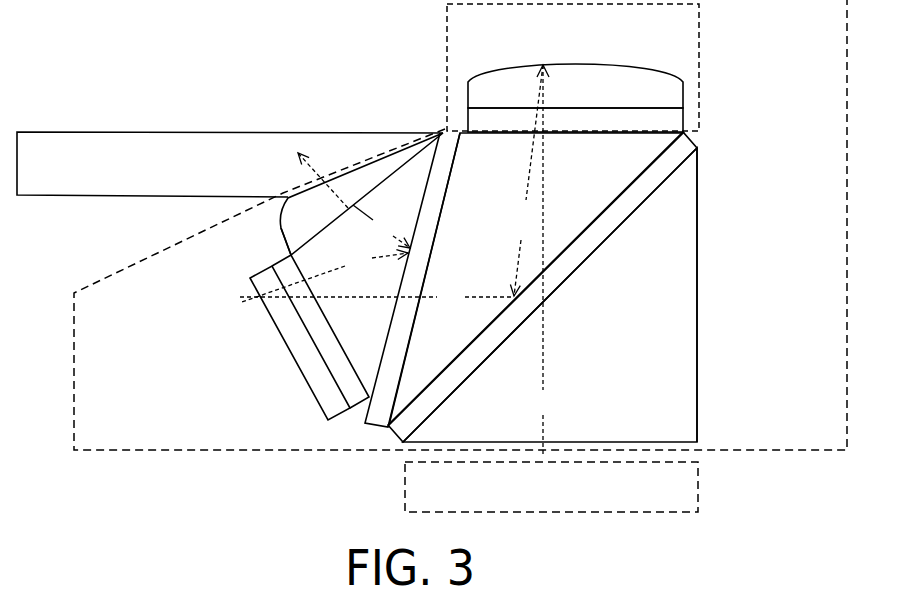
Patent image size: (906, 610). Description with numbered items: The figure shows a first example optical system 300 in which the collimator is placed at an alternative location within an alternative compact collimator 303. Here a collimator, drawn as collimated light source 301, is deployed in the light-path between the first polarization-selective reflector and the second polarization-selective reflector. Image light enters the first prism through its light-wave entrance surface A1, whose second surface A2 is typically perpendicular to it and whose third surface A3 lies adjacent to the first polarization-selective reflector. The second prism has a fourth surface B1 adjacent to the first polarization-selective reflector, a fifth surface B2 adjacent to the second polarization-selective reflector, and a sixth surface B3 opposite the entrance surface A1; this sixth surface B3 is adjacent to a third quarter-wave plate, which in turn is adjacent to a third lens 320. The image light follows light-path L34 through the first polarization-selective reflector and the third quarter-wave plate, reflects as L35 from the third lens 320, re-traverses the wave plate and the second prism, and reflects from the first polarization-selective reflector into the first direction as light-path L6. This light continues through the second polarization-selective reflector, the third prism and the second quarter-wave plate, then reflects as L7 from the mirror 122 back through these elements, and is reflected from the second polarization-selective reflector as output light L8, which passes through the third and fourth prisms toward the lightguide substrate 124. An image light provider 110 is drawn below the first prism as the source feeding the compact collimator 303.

The optical system 300 is at (298, 85).
The collimated light source 301 is at (573, 89).
The compact collimator 303 is at (460, 225).
The image light provider 110 is at (551, 487).
The lightguide substrate 124 is at (230, 164).
The third lens 320 is at (575, 86).
The mirror 122 is at (300, 343).
The light-wave entrance surface A1 is at (697, 440).
The second surface A2 is at (698, 217).
The third surface A3 is at (670, 182).
The fourth surface B1 is at (594, 220).
The fifth surface B2 is at (446, 220).
The sixth surface B3 is at (507, 134).
The light-path L6 is at (376, 297).
The reflected light L7 is at (325, 276).
The output light L8 is at (381, 226).
The light-path L34 is at (543, 261).
The reflected light L35 is at (529, 180).